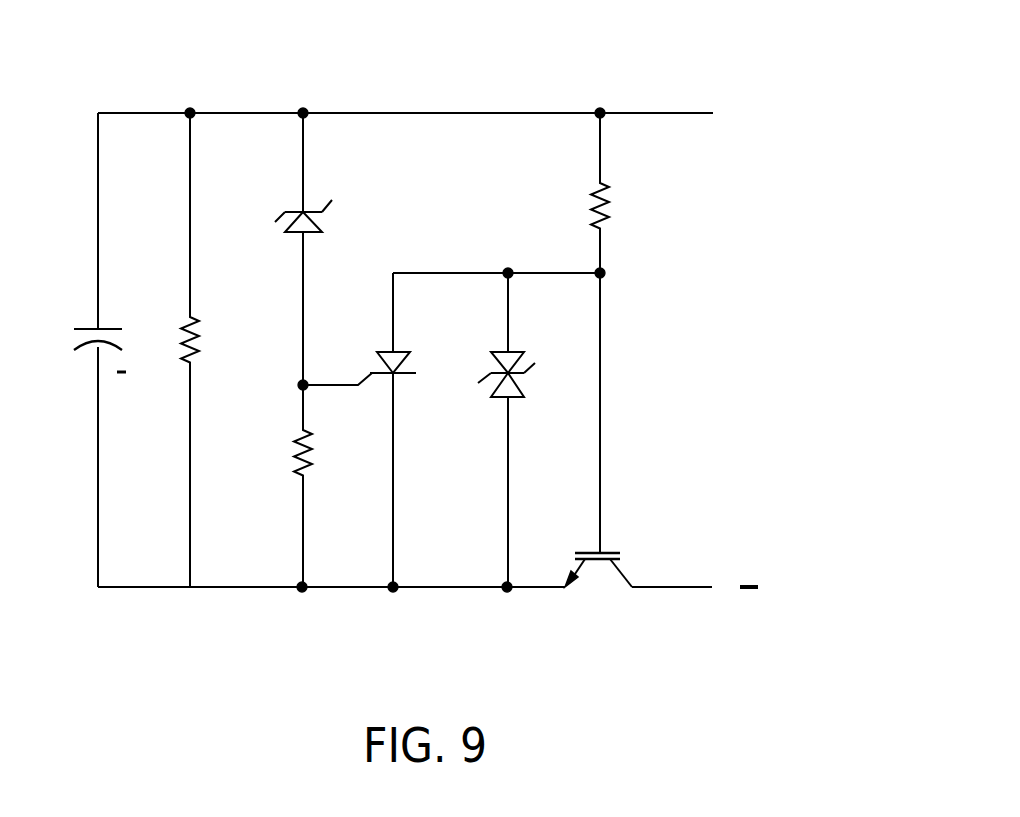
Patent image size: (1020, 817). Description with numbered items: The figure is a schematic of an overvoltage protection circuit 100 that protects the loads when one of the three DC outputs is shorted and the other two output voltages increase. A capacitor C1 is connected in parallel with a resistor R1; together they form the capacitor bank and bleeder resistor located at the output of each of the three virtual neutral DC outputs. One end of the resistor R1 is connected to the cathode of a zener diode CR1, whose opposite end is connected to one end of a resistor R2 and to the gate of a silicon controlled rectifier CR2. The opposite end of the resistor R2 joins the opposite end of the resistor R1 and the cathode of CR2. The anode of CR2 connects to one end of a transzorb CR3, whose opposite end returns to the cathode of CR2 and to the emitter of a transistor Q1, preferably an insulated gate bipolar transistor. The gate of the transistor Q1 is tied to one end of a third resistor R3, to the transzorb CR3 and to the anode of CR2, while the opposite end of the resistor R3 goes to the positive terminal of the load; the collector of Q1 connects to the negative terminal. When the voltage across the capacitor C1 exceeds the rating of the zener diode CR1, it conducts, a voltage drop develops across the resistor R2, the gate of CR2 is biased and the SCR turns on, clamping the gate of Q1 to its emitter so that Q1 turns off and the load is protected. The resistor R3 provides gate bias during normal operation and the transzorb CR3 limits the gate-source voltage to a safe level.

The overvoltage protection circuit 100 is at (122, 68).
The capacitor C1 is at (76, 333).
The resistor R1 is at (218, 350).
The resistor R2 is at (277, 483).
The third resistor R3 is at (637, 193).
The zener diode CR1 is at (334, 249).
The silicon controlled rectifier CR2 is at (387, 430).
The transzorb CR3 is at (532, 430).
The transistor Q1 is at (614, 430).